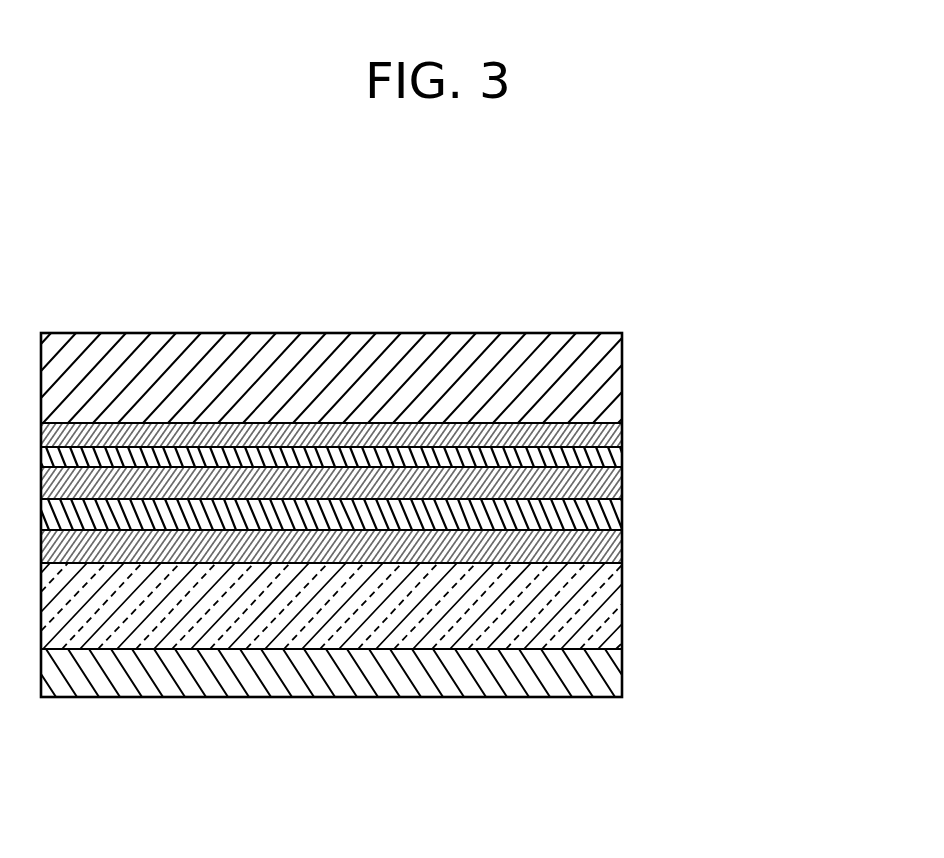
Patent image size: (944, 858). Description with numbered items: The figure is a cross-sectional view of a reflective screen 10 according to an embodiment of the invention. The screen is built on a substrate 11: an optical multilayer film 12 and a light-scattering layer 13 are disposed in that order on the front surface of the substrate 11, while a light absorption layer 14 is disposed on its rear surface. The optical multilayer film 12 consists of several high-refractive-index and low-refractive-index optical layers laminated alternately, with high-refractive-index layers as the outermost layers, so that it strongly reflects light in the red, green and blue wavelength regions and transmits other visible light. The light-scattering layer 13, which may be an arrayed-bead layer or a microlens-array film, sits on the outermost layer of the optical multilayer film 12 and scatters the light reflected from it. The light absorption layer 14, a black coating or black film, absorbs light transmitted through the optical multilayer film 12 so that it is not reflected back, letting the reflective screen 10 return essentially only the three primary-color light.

The reflective screen 10 is at (504, 298).
The light-scattering layer 13 is at (607, 382).
The optical multilayer film 12 is at (473, 463).
The substrate 11 is at (607, 630).
The light absorption layer 14 is at (607, 677).